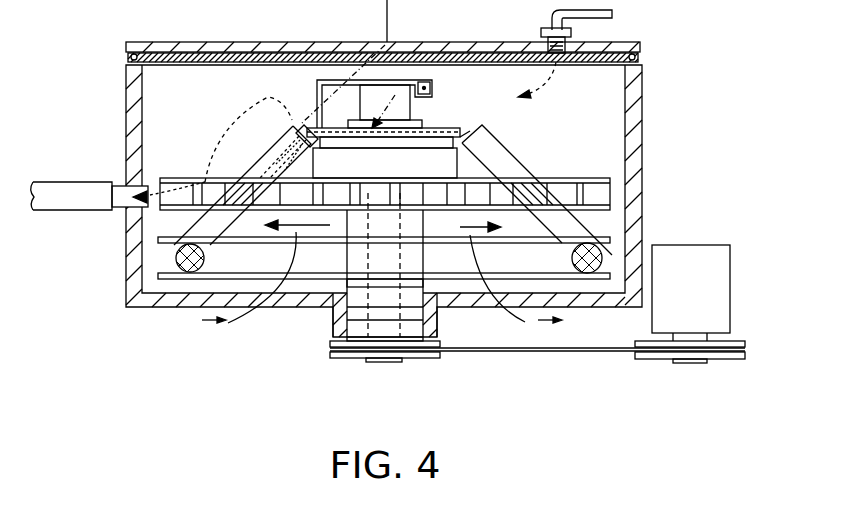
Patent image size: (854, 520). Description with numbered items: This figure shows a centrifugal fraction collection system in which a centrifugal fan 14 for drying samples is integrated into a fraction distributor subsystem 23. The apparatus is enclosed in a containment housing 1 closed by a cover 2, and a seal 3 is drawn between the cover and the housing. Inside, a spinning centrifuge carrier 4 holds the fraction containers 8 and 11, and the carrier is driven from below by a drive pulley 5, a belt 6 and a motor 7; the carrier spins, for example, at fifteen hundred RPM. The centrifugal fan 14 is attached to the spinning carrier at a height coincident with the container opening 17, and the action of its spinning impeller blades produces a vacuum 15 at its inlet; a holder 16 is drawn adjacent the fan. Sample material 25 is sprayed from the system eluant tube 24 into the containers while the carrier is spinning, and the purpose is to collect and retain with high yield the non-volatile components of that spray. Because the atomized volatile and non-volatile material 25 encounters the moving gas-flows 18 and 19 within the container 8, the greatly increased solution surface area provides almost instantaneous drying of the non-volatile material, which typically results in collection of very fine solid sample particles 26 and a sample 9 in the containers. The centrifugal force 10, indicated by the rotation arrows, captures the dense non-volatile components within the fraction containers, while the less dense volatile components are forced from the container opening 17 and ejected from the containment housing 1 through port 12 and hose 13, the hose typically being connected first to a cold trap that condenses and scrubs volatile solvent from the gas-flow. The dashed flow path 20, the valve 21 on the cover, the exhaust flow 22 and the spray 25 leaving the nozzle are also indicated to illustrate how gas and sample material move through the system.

The containment housing 1 is at (126, 84).
The cover 2 is at (172, 42).
The seal 3 is at (199, 63).
The centrifuge carrier 4 is at (587, 178).
The drive pulley 5 is at (330, 349).
The drive belt 6 is at (495, 346).
The motor 7 is at (652, 331).
The container 8 is at (500, 150).
The sample 9 is at (570, 264).
The centrifugal force 10 is at (194, 336).
The tube 11 is at (252, 174).
The port 12 is at (150, 185).
The hose 13 is at (62, 182).
The centrifugal fan 14 is at (448, 128).
The vacuum 15 is at (392, 95).
The holder 16 is at (464, 131).
The container opening 17 is at (290, 112).
The gas-flow 18 is at (313, 148).
The gas-flow 19 is at (265, 162).
The flow path 20 is at (222, 124).
The valve 21 is at (541, 32).
The exhaust flow 22 is at (552, 80).
The fraction distributor subsystem 23 is at (335, 80).
The system eluant tube 24 is at (386, 33).
The sprayed sample material 25 is at (284, 138).
The solid sample particles 26 is at (204, 264).